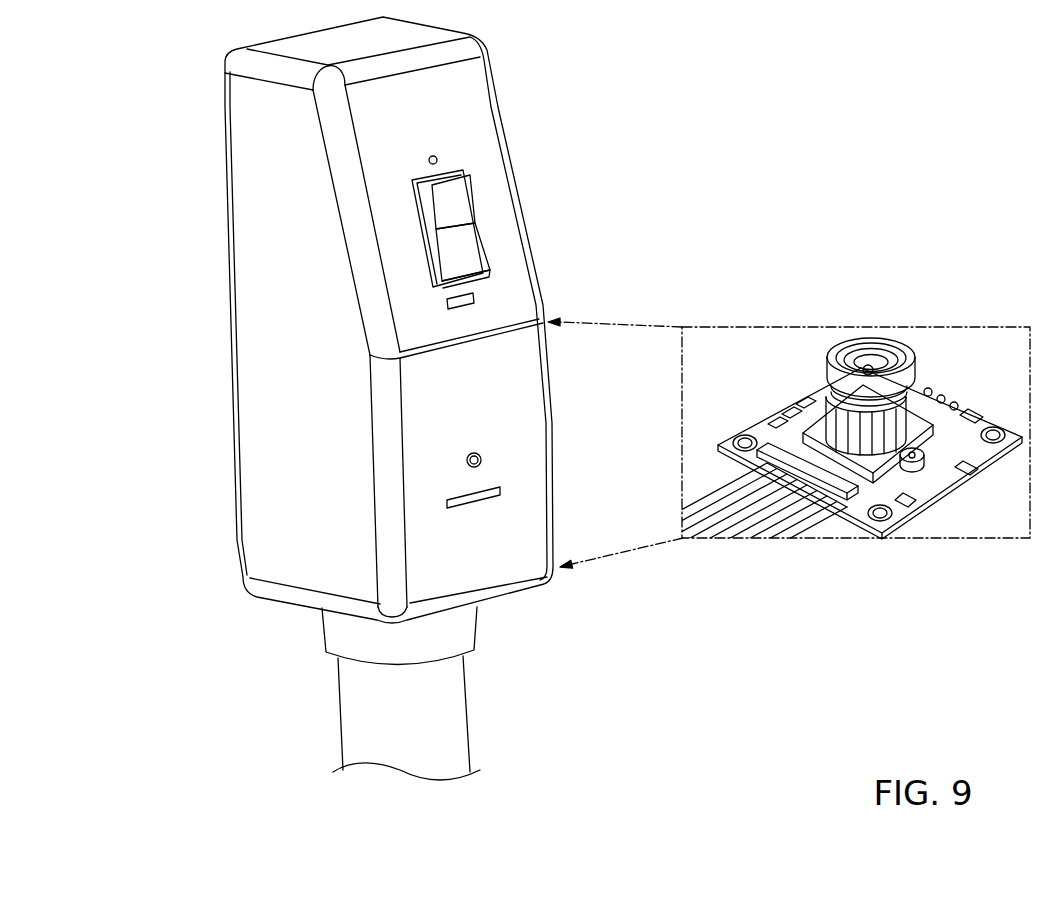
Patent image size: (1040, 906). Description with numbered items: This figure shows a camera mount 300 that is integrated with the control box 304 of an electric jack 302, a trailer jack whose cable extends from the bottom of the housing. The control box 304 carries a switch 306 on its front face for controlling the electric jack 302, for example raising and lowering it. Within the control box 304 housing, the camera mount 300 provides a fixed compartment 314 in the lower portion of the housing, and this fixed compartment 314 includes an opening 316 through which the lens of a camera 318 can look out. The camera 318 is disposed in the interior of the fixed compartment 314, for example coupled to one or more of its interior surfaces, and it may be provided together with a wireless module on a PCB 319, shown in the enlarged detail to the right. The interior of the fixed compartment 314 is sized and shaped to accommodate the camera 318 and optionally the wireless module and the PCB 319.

The camera mount 300 is at (363, 398).
The electric jack 302 is at (340, 732).
The control box 304 is at (365, 320).
The switch 306 is at (465, 172).
The fixed compartment 314 is at (380, 480).
The opening 316 is at (463, 462).
The camera 318 is at (816, 474).
The PCB 319 is at (732, 438).